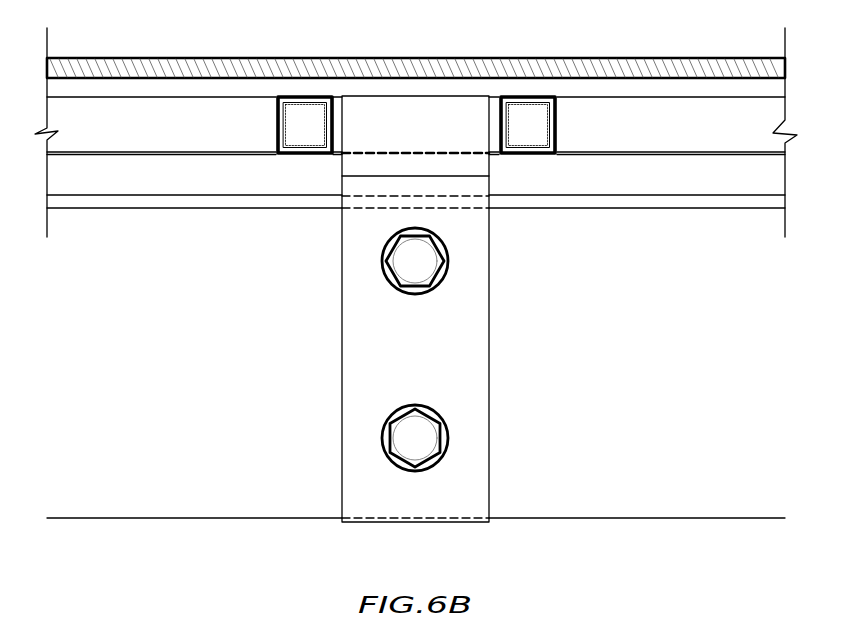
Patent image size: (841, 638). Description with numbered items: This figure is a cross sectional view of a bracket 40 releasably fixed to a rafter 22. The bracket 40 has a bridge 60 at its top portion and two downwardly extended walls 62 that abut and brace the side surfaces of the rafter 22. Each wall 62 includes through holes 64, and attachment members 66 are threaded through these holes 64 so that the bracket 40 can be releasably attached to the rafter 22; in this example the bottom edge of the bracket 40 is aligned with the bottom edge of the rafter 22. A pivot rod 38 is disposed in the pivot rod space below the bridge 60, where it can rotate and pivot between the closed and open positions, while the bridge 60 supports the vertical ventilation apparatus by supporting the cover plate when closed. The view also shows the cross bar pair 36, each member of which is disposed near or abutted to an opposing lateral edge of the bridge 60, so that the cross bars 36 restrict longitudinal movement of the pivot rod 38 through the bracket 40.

The bridge 60 is at (414, 96).
The pivot rod 38 is at (185, 173).
The cross bar pair 36 is at (277, 126).
The rafter 22 is at (300, 363).
The downwardly extended wall 62 is at (430, 363).
The through hole 64 is at (416, 294).
The attachment member 66 is at (444, 261).
The bracket 40 is at (369, 506).